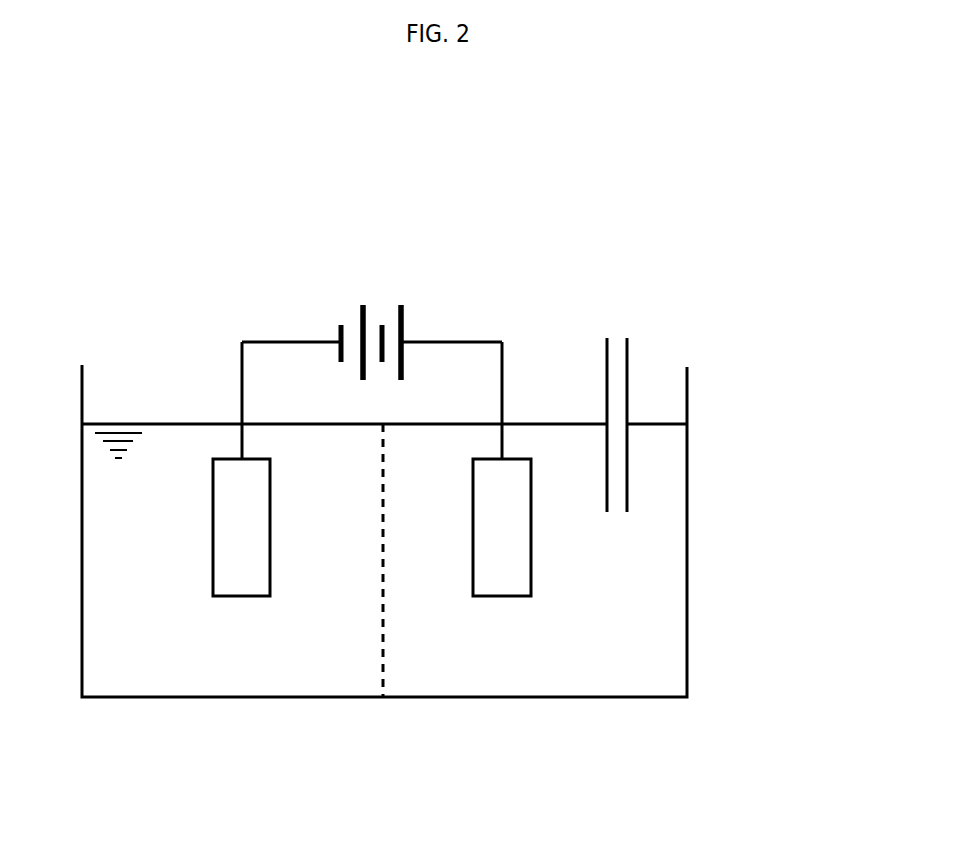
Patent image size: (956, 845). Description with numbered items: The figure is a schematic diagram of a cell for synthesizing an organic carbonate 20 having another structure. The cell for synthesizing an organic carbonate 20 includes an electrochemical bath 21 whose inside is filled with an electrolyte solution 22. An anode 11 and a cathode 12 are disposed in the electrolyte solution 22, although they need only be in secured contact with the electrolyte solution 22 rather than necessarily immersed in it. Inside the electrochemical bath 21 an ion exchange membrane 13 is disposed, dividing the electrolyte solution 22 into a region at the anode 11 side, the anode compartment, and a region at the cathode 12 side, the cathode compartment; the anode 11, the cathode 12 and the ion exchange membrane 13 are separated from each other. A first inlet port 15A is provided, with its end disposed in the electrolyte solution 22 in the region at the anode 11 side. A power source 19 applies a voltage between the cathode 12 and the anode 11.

The anode 11 is at (502, 580).
The cathode 12 is at (242, 580).
The ion exchange membrane 13 is at (382, 664).
The first inlet port 15A is at (628, 355).
The power source 19 is at (405, 322).
The cell for synthesizing an organic carbonate 20 is at (700, 292).
The electrochemical bath 21 is at (690, 390).
The electrolyte solution 22 is at (159, 478).